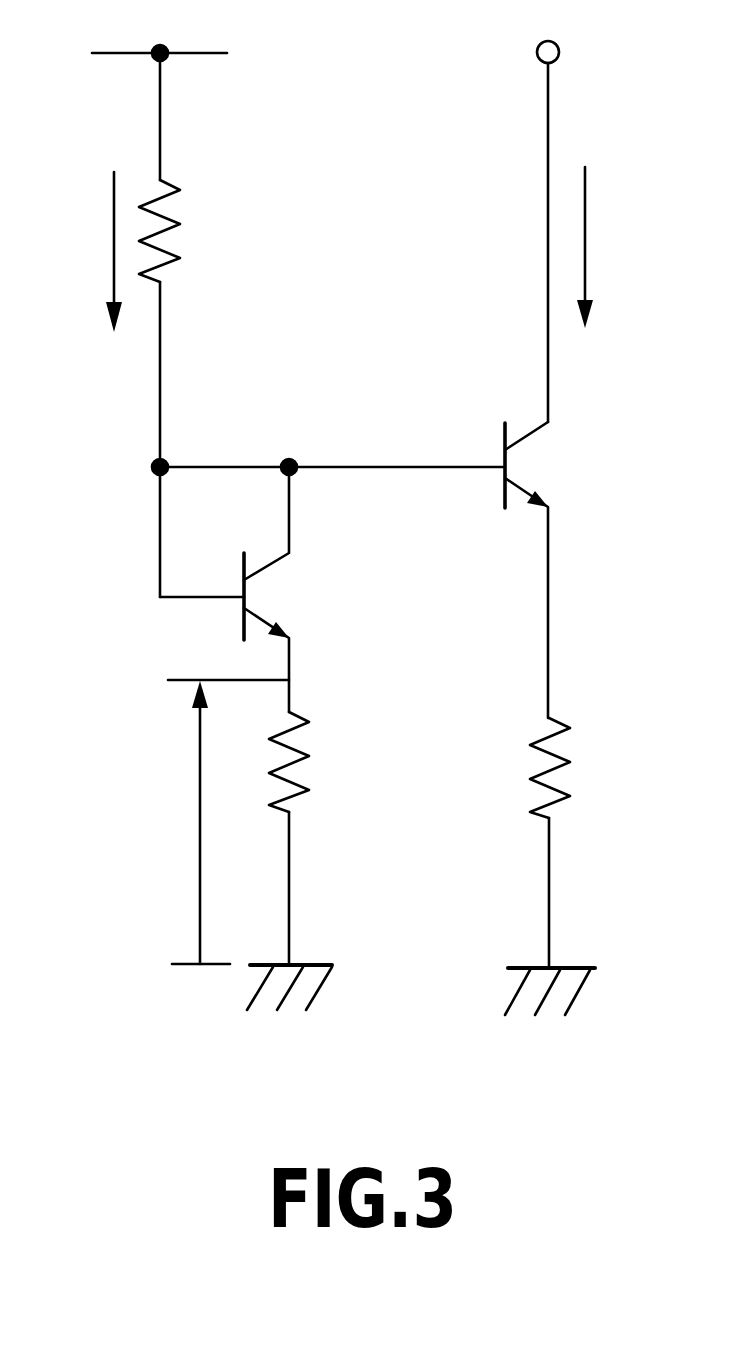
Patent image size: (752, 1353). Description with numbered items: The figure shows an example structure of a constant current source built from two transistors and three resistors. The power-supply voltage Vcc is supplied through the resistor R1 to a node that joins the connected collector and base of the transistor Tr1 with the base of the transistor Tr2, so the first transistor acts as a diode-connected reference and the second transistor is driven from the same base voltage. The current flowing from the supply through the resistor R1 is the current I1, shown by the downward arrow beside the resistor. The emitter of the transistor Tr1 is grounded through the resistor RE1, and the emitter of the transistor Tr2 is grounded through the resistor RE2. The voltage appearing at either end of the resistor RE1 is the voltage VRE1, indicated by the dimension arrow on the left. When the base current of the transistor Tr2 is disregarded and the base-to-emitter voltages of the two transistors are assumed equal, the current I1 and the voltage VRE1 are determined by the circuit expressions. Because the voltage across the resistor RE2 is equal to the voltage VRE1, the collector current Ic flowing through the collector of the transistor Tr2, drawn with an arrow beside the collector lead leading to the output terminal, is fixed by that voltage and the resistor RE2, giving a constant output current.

The power-supply voltage Vcc is at (159, 93).
The resistor R1 is at (188, 323).
The current I1 is at (92, 252).
The transistor Tr1 is at (283, 589).
The resistor RE1 is at (329, 838).
The voltage VRE1 is at (199, 822).
The collector current Ic is at (604, 247).
The transistor Tr2 is at (544, 570).
The resistor RE2 is at (588, 843).